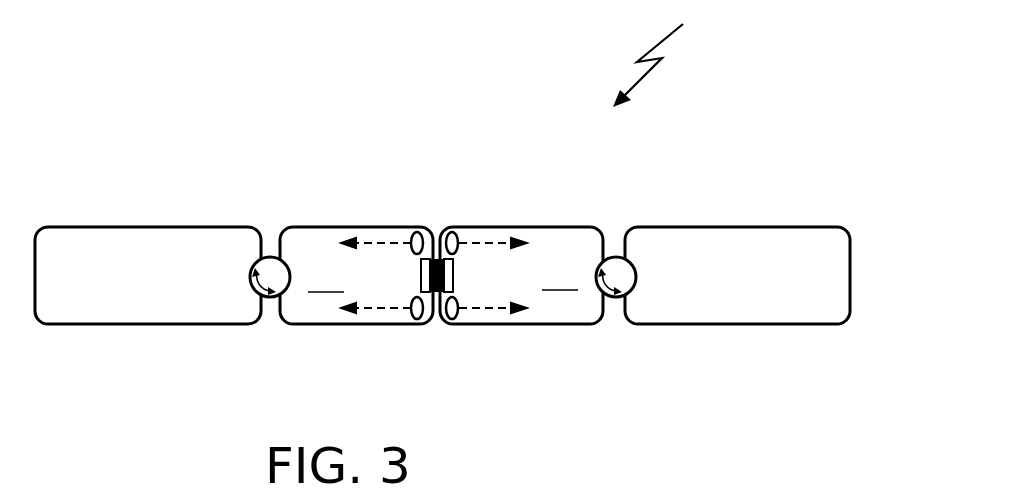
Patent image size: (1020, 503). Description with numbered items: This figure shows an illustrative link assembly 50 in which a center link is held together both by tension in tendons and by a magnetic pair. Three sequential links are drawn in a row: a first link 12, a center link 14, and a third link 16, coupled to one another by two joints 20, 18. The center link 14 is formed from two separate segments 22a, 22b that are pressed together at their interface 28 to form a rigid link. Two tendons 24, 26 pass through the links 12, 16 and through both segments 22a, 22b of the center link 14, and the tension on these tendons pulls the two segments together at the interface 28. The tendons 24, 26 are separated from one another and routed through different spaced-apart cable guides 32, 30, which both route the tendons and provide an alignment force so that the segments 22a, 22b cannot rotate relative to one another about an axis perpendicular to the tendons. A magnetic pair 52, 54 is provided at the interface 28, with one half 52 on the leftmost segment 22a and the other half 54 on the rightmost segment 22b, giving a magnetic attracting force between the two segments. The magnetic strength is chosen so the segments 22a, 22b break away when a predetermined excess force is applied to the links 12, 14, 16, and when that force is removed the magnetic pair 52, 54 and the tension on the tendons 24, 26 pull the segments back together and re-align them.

The link assembly 50 is at (660, 53).
The link 12 is at (110, 263).
The link 16 is at (720, 260).
The segment 22a is at (330, 226).
The segment 22b is at (550, 226).
The center link 14 is at (443, 276).
The joint 20 is at (268, 297).
The joint 18 is at (617, 297).
The interface 28 is at (437, 227).
The magnetic pair half 54 is at (421, 278).
The magnetic pair half 52 is at (453, 283).
The cable guide 32 is at (411, 250).
The cable guide 30 is at (458, 237).
The tendon 24 is at (483, 248).
The tendon 26 is at (493, 312).